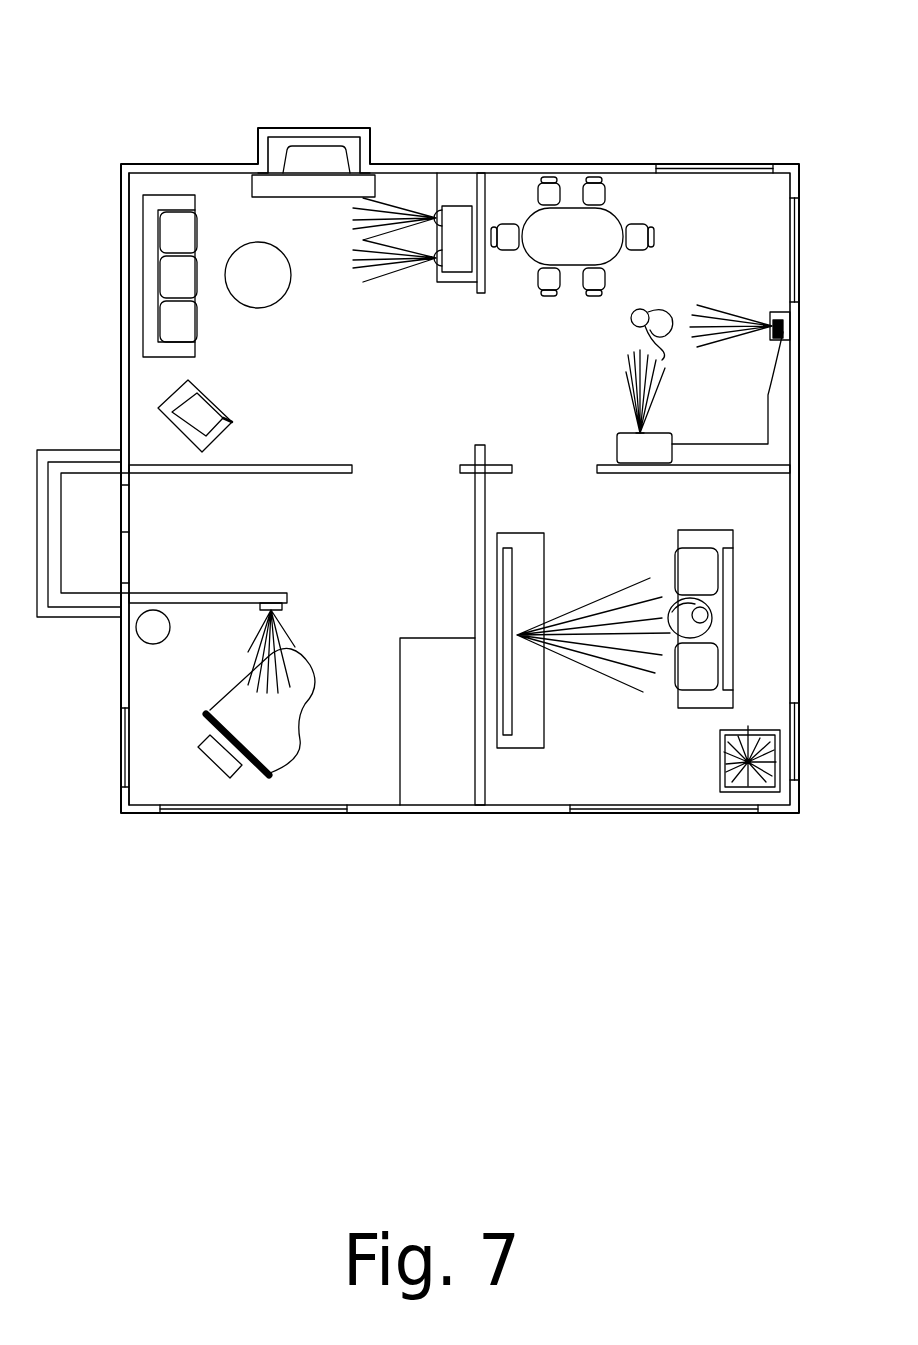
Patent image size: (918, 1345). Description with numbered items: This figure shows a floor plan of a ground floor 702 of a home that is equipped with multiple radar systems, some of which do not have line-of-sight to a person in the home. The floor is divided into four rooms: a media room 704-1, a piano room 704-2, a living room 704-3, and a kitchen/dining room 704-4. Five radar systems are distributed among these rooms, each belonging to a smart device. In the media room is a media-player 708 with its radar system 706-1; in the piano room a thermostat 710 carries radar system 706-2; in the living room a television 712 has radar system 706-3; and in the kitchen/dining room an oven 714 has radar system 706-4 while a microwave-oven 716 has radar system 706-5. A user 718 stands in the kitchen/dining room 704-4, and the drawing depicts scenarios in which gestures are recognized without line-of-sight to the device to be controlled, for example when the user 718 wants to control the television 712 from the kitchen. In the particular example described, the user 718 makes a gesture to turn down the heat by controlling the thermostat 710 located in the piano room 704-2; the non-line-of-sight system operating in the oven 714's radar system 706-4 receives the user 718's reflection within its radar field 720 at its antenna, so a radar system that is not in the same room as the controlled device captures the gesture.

The ground floor 702 is at (124, 62).
The media room 704-1 is at (328, 454).
The piano room 704-2 is at (376, 796).
The living room 704-3 is at (561, 798).
The kitchen/dining room 704-4 is at (778, 207).
The media-player's radar system 706-1 is at (437, 260).
The thermostat's radar system 706-2 is at (268, 600).
The television's radar system 706-3 is at (517, 635).
The oven's radar system 706-4 is at (628, 425).
The microwave-oven's radar system 706-5 is at (768, 322).
The media-player 708 is at (460, 220).
The thermostat 710 is at (287, 605).
The television 712 is at (508, 568).
The oven 714 is at (628, 450).
The microwave-oven 716 is at (783, 330).
The user 718 is at (625, 326).
The radar field 720 is at (612, 385).